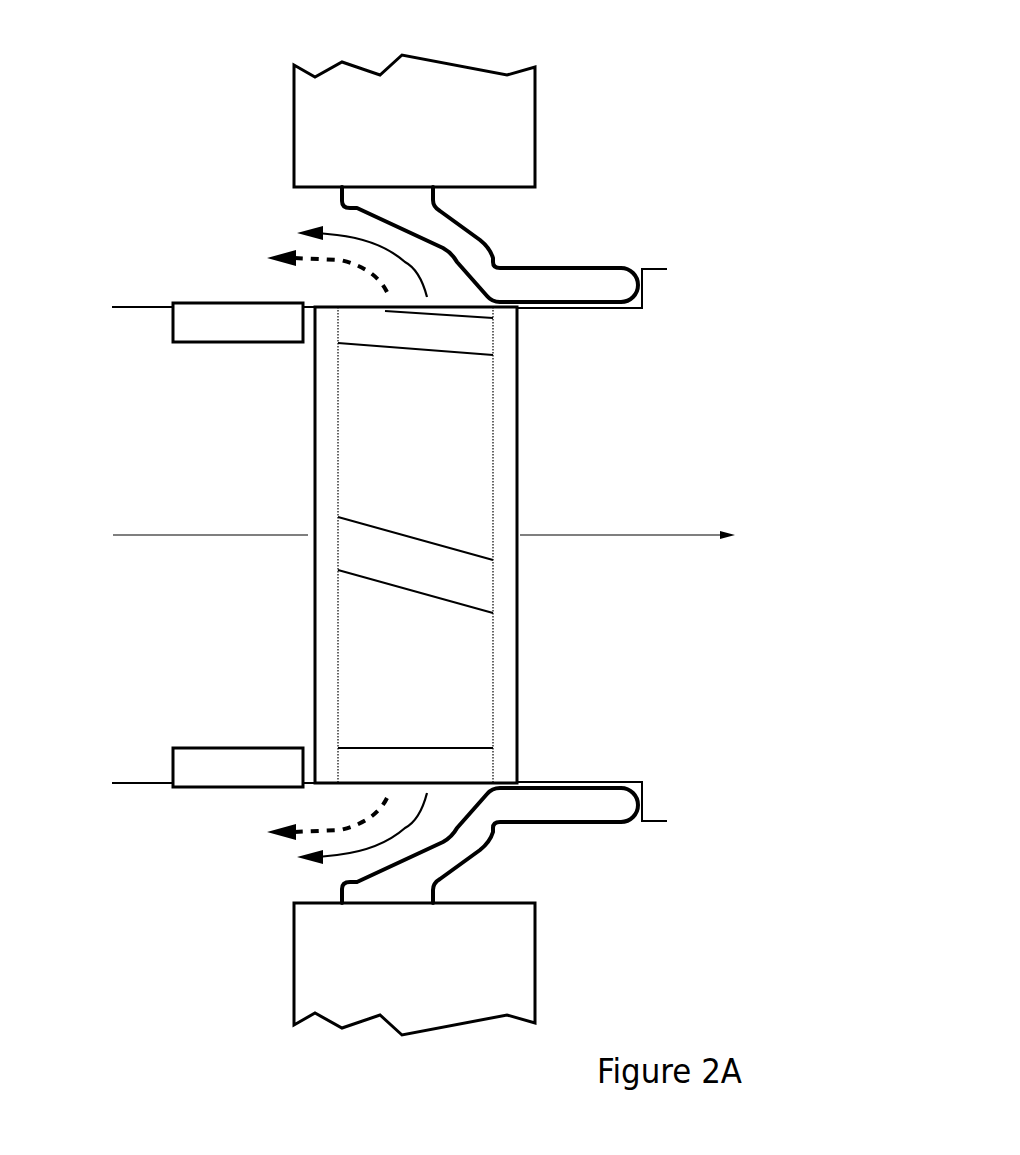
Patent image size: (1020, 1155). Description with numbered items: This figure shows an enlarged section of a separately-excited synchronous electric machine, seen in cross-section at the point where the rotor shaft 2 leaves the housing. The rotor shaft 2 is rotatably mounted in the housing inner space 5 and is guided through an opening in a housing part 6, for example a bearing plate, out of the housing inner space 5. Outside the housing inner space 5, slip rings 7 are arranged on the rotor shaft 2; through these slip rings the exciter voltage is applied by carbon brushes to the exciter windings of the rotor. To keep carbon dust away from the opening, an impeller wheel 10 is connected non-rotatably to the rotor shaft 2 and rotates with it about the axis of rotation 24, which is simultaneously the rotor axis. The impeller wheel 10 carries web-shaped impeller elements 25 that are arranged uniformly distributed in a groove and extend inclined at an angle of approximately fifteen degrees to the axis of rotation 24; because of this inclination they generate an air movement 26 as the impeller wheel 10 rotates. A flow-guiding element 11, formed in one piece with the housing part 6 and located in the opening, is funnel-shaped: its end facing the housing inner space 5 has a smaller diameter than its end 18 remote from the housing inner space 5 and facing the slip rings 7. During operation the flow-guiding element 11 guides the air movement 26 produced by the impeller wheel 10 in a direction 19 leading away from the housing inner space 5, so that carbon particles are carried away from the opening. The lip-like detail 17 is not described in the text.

The rotor shaft 2 is at (163, 437).
The housing inner space 5 is at (668, 160).
The housing part 6 is at (410, 103).
The slip rings 7 is at (245, 328).
The impeller wheel 10 is at (505, 468).
The flow-guiding element 11 is at (485, 268).
The sealing lip 17 is at (575, 290).
The end 18 is at (396, 207).
The direction 19 is at (305, 233).
The axis of rotation 24 is at (688, 535).
The impeller elements 25 is at (375, 337).
The air movement 26 is at (285, 258).